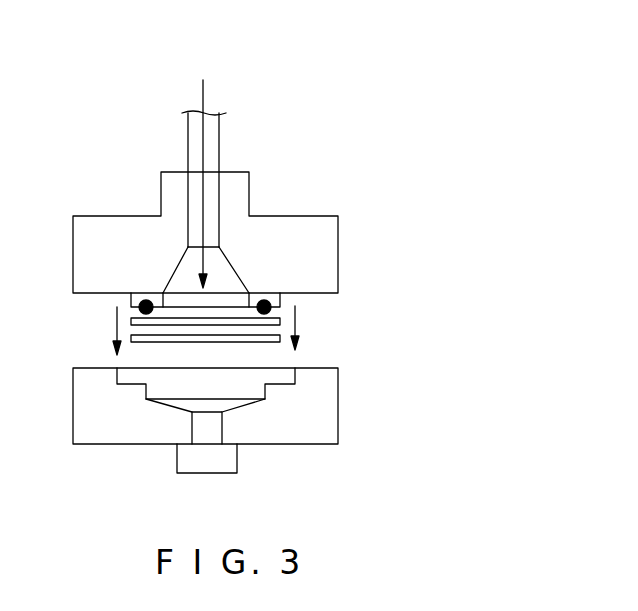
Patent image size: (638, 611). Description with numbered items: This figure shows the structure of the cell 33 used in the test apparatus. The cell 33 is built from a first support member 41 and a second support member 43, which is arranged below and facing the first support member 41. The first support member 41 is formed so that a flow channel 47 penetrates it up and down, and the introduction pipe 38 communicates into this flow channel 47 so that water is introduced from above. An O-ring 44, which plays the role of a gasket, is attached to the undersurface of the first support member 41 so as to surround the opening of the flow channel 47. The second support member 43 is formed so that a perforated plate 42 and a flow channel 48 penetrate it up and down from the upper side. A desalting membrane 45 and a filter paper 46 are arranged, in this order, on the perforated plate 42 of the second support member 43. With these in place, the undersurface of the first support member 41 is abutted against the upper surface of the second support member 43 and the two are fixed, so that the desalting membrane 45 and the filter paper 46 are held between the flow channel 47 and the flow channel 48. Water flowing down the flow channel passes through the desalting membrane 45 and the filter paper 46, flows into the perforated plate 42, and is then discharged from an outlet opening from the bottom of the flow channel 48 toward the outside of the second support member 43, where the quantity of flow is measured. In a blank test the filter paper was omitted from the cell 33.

The cell 33 is at (357, 124).
The introduction pipe 38 is at (210, 138).
The first support member 41 is at (103, 232).
The perforated plate 42 is at (268, 390).
The second support member 43 is at (115, 432).
The O-ring 44 is at (266, 300).
The desalting membrane 45 is at (283, 322).
The filter paper 46 is at (283, 340).
The flow channel 47 is at (230, 271).
The flow channel 48 is at (213, 428).